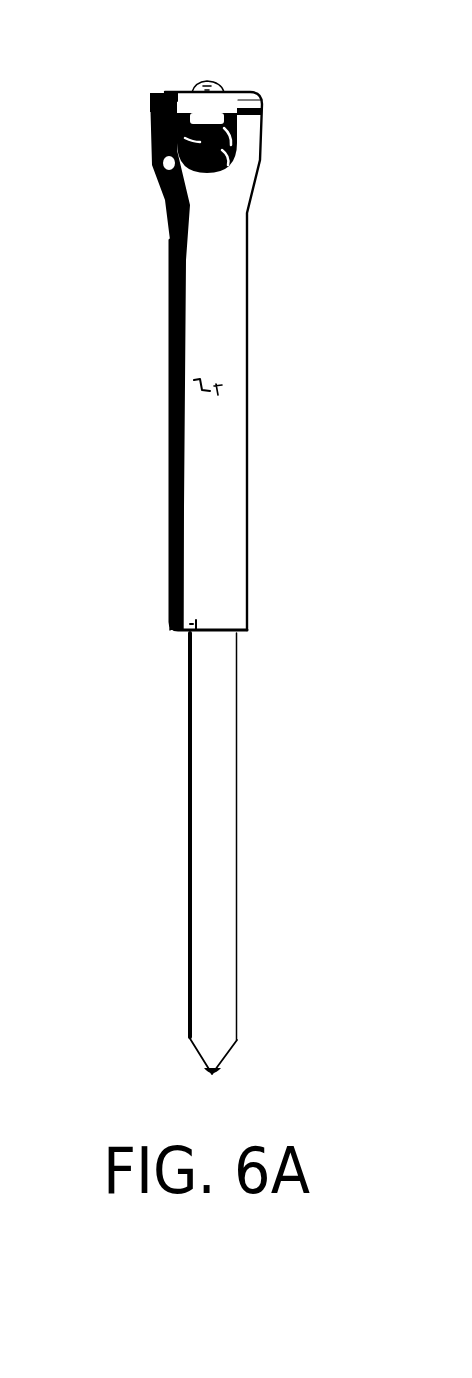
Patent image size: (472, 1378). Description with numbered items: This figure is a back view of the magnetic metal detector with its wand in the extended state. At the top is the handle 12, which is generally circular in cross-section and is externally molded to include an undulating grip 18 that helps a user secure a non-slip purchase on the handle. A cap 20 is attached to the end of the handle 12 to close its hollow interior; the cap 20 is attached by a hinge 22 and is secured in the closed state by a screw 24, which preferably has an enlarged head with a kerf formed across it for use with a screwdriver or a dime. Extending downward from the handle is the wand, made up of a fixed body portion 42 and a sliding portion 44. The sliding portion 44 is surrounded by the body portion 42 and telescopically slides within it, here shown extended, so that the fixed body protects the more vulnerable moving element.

The handle 12 is at (231, 73).
The undulating grip 18 is at (225, 162).
The cap 20 is at (207, 100).
The hinge 22 is at (152, 143).
The screw 24 is at (207, 77).
The body portion 42 is at (203, 467).
The sliding portion 44 is at (207, 837).